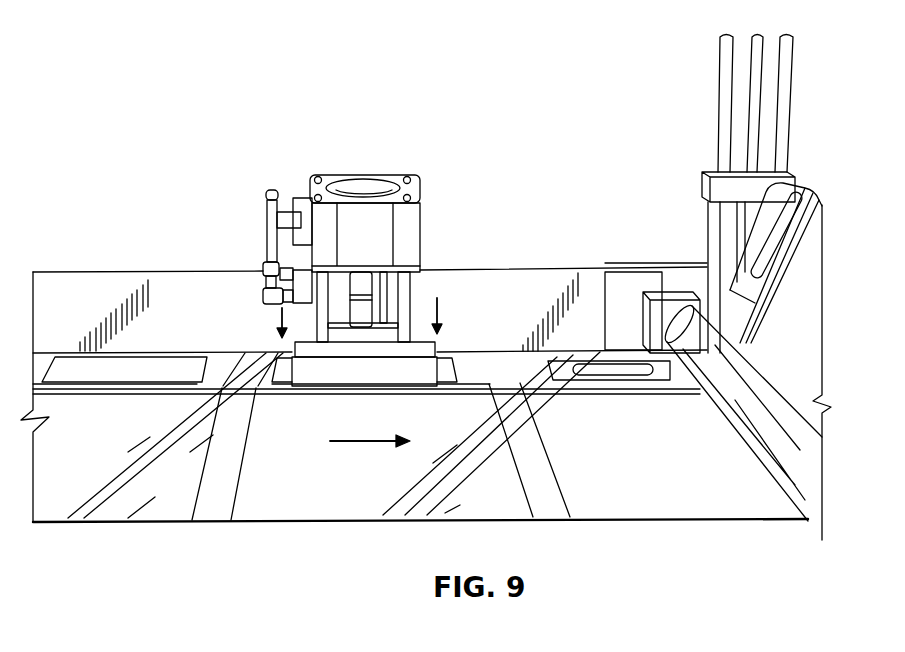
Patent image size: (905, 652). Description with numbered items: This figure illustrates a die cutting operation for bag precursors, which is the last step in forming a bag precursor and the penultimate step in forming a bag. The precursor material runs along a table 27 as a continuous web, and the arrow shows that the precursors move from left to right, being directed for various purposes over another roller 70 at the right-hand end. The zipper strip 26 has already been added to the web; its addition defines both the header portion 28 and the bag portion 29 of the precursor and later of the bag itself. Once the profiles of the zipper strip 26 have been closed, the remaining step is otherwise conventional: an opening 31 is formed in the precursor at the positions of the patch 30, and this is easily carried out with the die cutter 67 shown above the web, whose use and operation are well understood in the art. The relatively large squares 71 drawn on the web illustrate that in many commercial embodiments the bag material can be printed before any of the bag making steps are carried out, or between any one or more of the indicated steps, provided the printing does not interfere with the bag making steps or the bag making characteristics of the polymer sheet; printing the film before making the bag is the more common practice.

The die cutter 67 is at (433, 209).
The header portion 28 is at (491, 371).
The patch 30 is at (124, 371).
The zipper strip 26 is at (271, 394).
The bag portion 29 is at (287, 511).
The table 27 is at (341, 522).
The squares 71 is at (550, 457).
The opening 31 is at (637, 368).
The roller 70 is at (785, 450).